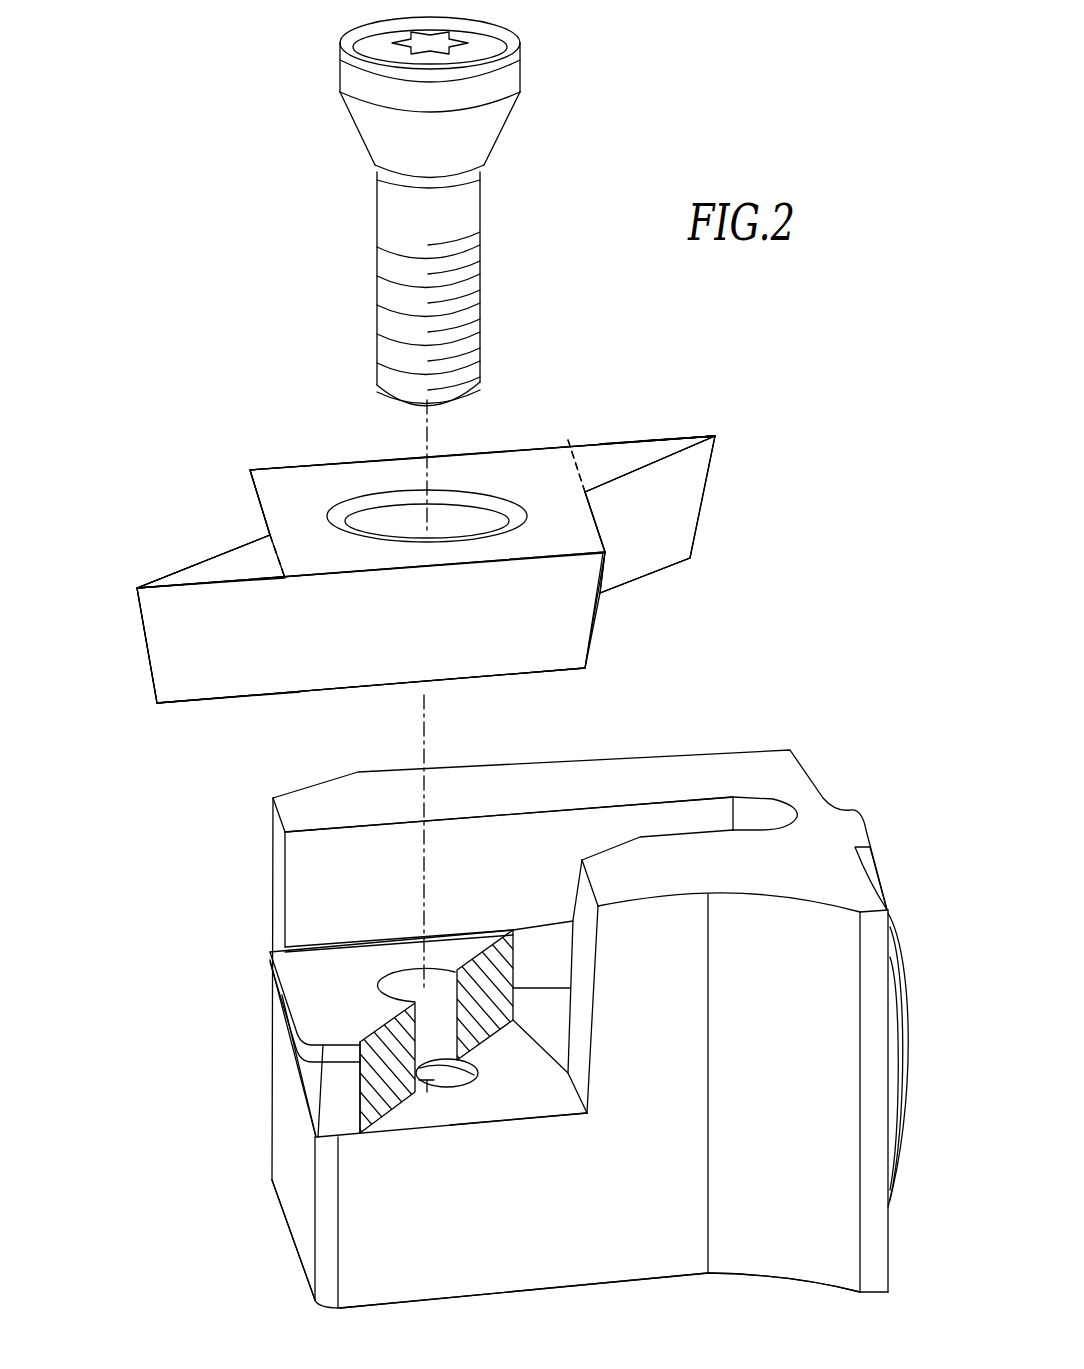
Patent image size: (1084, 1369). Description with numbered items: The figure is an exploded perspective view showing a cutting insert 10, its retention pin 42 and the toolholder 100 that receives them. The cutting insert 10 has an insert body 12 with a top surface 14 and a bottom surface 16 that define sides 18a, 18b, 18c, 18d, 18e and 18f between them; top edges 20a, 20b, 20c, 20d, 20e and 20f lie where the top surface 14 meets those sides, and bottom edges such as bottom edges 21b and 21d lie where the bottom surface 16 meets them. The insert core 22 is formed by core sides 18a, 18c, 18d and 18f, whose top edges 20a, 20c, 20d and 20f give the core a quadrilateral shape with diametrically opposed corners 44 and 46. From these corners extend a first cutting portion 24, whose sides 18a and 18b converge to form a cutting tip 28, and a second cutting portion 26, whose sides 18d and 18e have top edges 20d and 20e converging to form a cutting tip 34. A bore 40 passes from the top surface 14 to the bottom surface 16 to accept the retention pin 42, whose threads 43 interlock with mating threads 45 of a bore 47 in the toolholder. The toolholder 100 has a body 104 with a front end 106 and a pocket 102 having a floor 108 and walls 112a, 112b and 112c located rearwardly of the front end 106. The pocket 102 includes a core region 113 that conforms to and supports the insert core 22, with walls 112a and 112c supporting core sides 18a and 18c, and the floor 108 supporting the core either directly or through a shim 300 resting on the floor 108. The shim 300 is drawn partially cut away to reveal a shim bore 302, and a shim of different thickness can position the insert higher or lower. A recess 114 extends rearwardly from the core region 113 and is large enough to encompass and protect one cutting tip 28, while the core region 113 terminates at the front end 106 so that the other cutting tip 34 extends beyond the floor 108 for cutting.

The cutting insert 10 is at (425, 635).
The insert body 12 is at (300, 487).
The top surface 14 is at (340, 477).
The bottom surface 16 is at (217, 703).
The first core side 18a is at (640, 437).
The side 18b is at (697, 492).
The second core side 18c is at (595, 623).
The first core side 18d is at (570, 652).
The side 18e is at (173, 573).
The second core side 18f is at (258, 513).
The top edge 20a is at (628, 437).
The top edge 20b is at (700, 448).
The top edge 20c is at (597, 523).
The top edge 20d is at (503, 563).
The top edge 20e is at (160, 580).
The top edge 20f is at (250, 480).
The bottom edge 21b is at (668, 568).
The bottom edge 21d is at (245, 703).
The insert core 22 is at (487, 462).
The first cutting portion 24 is at (665, 445).
The second cutting portion 26 is at (212, 567).
The cutting tip 28 is at (680, 443).
The cutting tip 34 is at (180, 582).
The bore 40 is at (395, 512).
The retention pin 42 is at (376, 212).
The threads 43 is at (476, 265).
The corner 44 is at (568, 438).
The mating threads 45 is at (427, 1092).
The corner 46 is at (287, 577).
The bore 47 is at (463, 1068).
The toolholder 100 is at (533, 1259).
The pocket 102 is at (537, 1103).
The body 104 is at (788, 1262).
The front end 106 is at (290, 1197).
The floor 108 is at (490, 1113).
The wall 112a is at (388, 850).
The wall 112b is at (603, 852).
The wall 112c is at (583, 953).
The core region 113 is at (500, 1103).
The recess 114 is at (757, 812).
The shim 300 is at (333, 1093).
The shim bore 302 is at (393, 975).